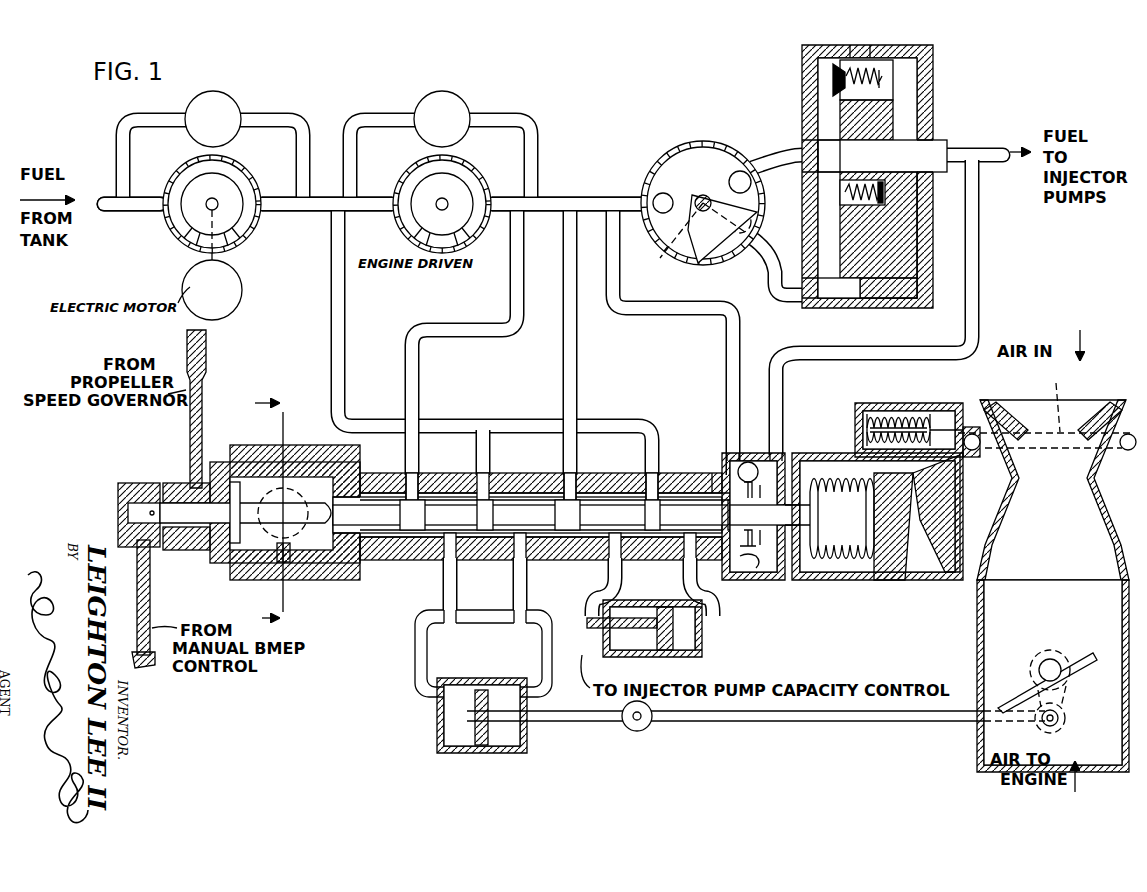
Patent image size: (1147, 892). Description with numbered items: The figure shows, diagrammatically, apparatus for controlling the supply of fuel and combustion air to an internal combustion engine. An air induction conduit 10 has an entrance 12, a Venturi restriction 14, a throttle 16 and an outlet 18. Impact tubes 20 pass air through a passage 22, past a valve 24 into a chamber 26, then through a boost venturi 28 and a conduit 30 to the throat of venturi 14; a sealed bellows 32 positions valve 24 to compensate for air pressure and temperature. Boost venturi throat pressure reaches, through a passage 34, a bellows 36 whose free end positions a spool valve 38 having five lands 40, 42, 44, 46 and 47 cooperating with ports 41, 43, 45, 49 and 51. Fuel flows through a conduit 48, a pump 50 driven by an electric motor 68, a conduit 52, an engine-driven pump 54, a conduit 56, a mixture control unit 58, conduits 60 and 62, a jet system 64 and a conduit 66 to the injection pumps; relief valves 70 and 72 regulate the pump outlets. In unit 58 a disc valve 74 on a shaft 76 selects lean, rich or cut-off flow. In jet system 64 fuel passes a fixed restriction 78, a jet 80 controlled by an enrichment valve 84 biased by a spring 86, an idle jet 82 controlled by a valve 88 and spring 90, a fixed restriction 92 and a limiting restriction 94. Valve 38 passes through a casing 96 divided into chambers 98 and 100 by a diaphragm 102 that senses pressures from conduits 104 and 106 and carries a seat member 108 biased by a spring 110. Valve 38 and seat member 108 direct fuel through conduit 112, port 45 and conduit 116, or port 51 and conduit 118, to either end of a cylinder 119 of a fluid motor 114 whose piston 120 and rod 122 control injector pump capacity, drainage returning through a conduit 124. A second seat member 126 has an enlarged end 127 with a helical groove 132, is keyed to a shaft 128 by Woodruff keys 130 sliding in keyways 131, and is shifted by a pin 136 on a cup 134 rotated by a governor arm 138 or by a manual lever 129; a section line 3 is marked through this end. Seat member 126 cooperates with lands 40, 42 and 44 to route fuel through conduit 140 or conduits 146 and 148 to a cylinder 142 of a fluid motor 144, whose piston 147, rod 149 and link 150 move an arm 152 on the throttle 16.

The air induction conduit 10 is at (975, 620).
The entrance 12 is at (1055, 416).
The Venturi restriction 14 is at (1083, 488).
The throttle 16 is at (1089, 650).
The outlet 18 is at (1099, 731).
The impact tubes 20 is at (1009, 410).
The passage 22 is at (1056, 398).
The valve 24 is at (944, 415).
The chamber 26 is at (936, 436).
The boost venturi 28 is at (938, 520).
The conduit 30 is at (959, 513).
The sealed bellows 32 is at (884, 418).
The passage 34 is at (886, 581).
The flexible bellows 36 is at (836, 562).
The spool valve 38 is at (713, 476).
The land 40 is at (412, 515).
The port 41 is at (425, 478).
The land 42 is at (492, 490).
The port 43 is at (480, 480).
The land 44 is at (567, 515).
The port 45 is at (564, 487).
The land 46 is at (647, 489).
The land 47 is at (753, 524).
The conduit 48 is at (143, 212).
The port 49 is at (659, 470).
The pump 50 is at (252, 226).
The port 51 is at (735, 478).
The conduit 52 is at (318, 212).
The rotary pump 54 is at (404, 225).
The conduit 56 is at (573, 196).
The mixture control unit 58 is at (705, 143).
The conduit 60 is at (778, 141).
The conduit 62 is at (783, 252).
The jet system 64 is at (802, 64).
The conduit 66 is at (972, 143).
The electric motor 68 is at (243, 283).
The pressure relief valve 70 is at (233, 96).
The pressure relief valve 72 is at (462, 96).
The disc valve 74 is at (695, 262).
The shaft 76 is at (697, 197).
The restriction 78 is at (866, 154).
The jet 80 is at (879, 192).
The idle jet 82 is at (886, 90).
The enrichment valve 84 is at (882, 205).
The spring 86 is at (828, 156).
The valve 88 is at (900, 78).
The spring 90 is at (855, 52).
The fixed restriction 92 is at (868, 290).
The limiting restriction 94 is at (905, 170).
The casing 96 is at (744, 577).
The chamber 98 is at (737, 578).
The chamber 100 is at (762, 578).
The flexible diaphragm 102 is at (760, 578).
The conduit 104 is at (728, 357).
The conduit 106 is at (778, 357).
The seat member 108 is at (715, 480).
The spring 110 is at (778, 470).
The conduit 112 is at (578, 374).
The fluid motor 114 is at (658, 659).
The conduit 116 is at (607, 582).
The conduit 118 is at (686, 586).
The cylinder 119 is at (699, 620).
The piston 120 is at (670, 650).
The rod 122 is at (590, 629).
The conduit 124 is at (537, 424).
The seat member 126 is at (377, 540).
The enlarged left end 127 is at (313, 561).
The shaft 128 is at (198, 523).
The manual control lever 129 is at (152, 668).
The Woodruff keys 130 is at (278, 470).
The keyways 131 is at (312, 470).
The helical groove 132 is at (275, 563).
The cup 134 is at (224, 566).
The pin 136 is at (288, 560).
The arm 138 is at (188, 420).
The conduit 140 is at (528, 616).
The cylinder 142 is at (527, 738).
The fluid motor 144 is at (500, 762).
The conduit 146 is at (420, 398).
The piston 147 is at (436, 697).
The conduit 148 is at (450, 611).
The rod 149 is at (585, 722).
The link 150 is at (812, 723).
The arm 152 is at (1068, 683).
The section line 3- 3 is at (261, 511).